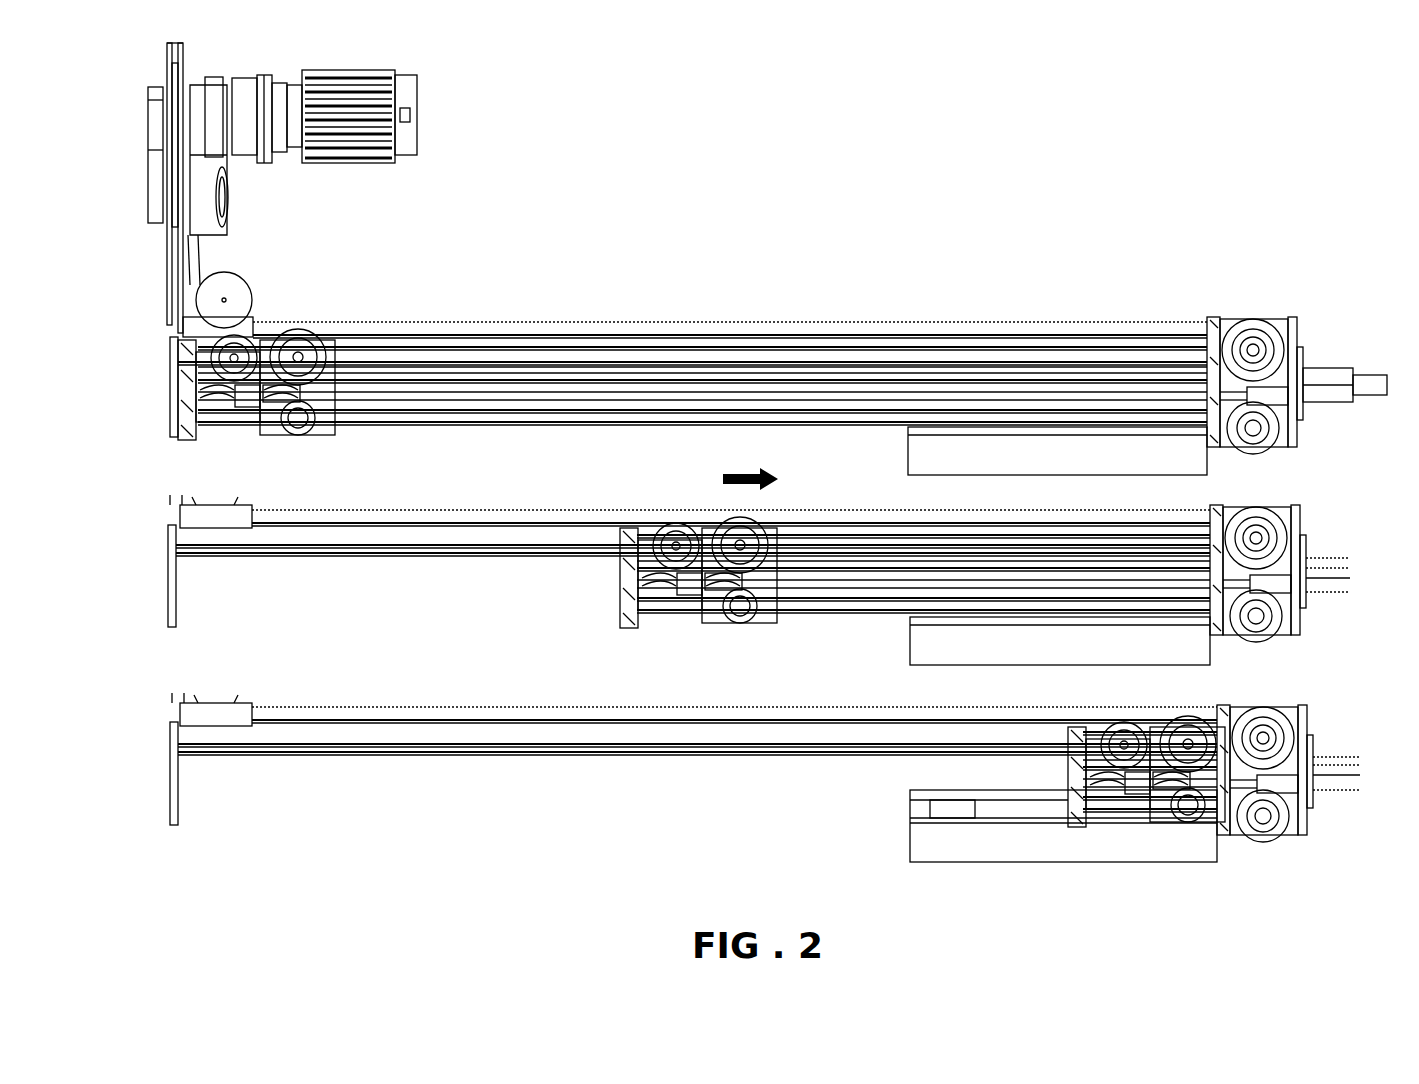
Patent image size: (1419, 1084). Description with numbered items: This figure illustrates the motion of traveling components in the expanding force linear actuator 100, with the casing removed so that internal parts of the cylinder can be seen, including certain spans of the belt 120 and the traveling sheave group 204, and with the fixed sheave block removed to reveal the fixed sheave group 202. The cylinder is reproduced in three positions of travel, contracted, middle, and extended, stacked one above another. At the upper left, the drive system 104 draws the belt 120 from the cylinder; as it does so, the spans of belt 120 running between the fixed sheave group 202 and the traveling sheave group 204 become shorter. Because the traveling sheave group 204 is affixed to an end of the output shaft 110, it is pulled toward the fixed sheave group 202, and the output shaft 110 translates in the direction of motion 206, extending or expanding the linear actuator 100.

The expanding force linear actuator 100 is at (767, 452).
The drive system 104 is at (450, 131).
The output shaft 110 is at (1345, 360).
The belt 120 is at (613, 323).
The fixed sheave group 202 is at (1252, 322).
The traveling sheave group 204 is at (1080, 768).
The direction of motion 206 is at (687, 469).